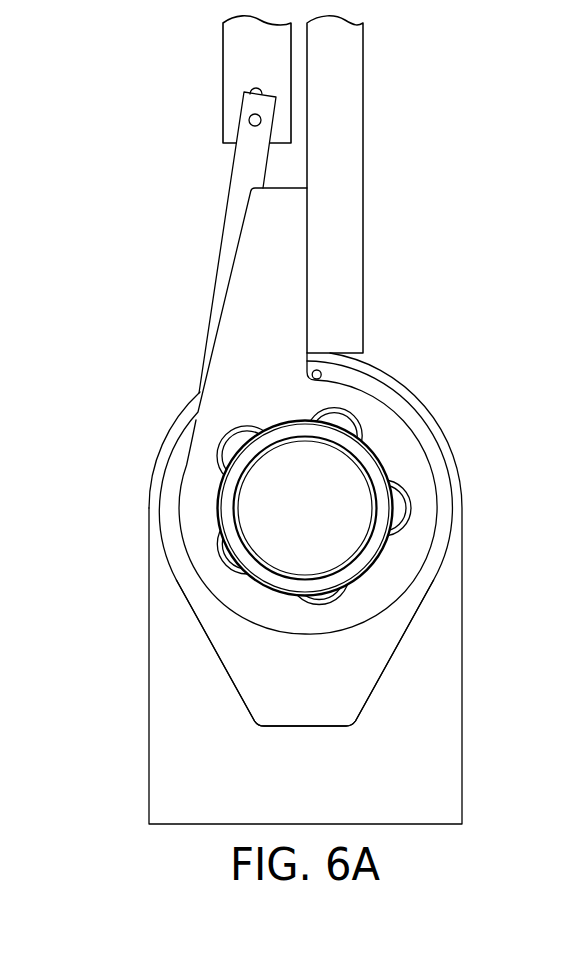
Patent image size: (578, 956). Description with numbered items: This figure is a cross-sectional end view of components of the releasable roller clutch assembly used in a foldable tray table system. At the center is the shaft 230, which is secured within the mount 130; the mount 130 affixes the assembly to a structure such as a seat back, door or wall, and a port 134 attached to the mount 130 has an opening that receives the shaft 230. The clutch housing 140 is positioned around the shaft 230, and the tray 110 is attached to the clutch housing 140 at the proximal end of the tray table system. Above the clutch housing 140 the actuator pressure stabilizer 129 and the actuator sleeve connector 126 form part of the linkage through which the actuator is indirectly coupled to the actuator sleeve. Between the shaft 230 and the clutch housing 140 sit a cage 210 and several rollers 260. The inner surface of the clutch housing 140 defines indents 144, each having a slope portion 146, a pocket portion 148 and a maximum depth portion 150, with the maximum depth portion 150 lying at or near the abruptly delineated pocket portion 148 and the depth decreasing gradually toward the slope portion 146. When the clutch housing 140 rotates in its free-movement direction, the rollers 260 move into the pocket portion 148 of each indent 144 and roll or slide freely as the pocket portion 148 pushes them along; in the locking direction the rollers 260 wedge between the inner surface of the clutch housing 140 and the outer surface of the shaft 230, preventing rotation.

The tray 110 is at (321, 116).
The actuator sleeve connector 126 is at (233, 169).
The actuator pressure stabilizer 129 is at (238, 58).
The mount 130 is at (356, 789).
The port 134 is at (296, 701).
The clutch housing 140 is at (240, 330).
The indent 144 is at (330, 602).
The slope portion 146 is at (363, 430).
The pocket portion 148 is at (322, 406).
The maximum depth portion 150 is at (398, 473).
The cage 210 is at (385, 527).
The shaft 230 is at (288, 523).
The roller 260 is at (236, 563).